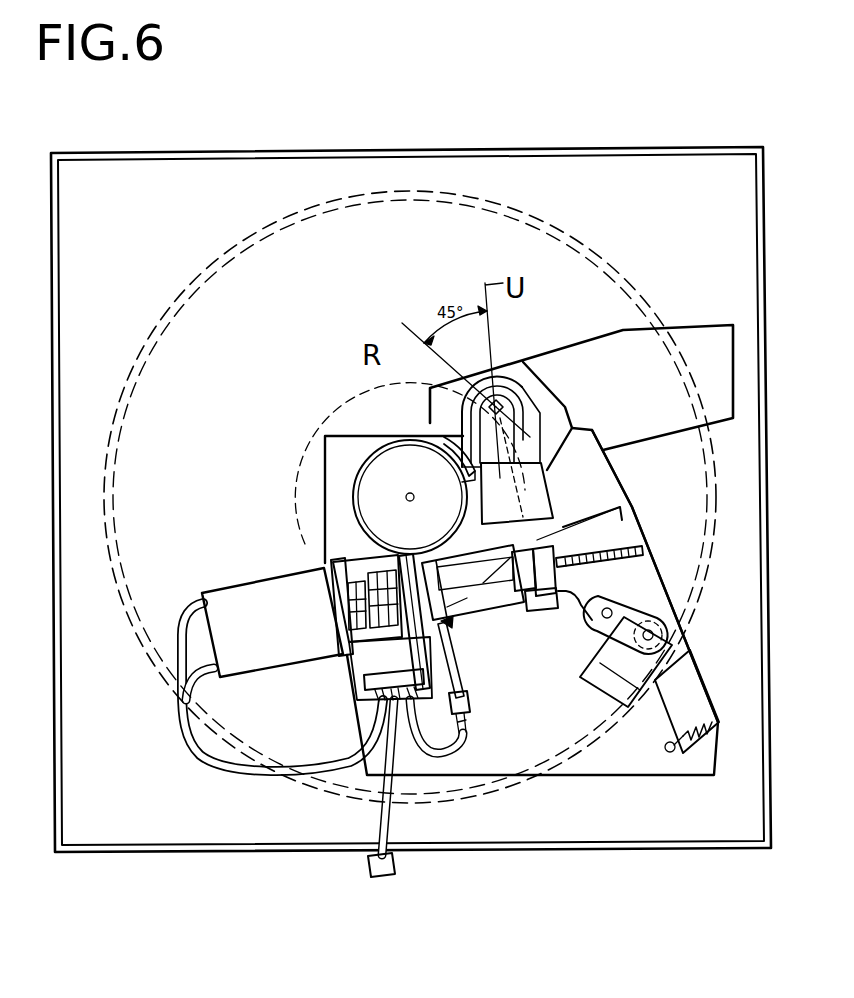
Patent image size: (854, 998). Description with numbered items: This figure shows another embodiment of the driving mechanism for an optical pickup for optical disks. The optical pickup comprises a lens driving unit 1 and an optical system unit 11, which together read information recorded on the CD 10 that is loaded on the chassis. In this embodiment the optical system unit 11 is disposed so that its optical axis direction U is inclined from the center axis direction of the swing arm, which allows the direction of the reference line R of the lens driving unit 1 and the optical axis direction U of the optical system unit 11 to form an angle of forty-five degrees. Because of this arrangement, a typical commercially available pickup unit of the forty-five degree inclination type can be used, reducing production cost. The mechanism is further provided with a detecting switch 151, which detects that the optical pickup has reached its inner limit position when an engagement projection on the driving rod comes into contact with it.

The lens driving unit 1 is at (522, 378).
The CD 10 is at (605, 345).
The optical system unit 11 is at (545, 492).
The detecting switch 151 is at (464, 661).